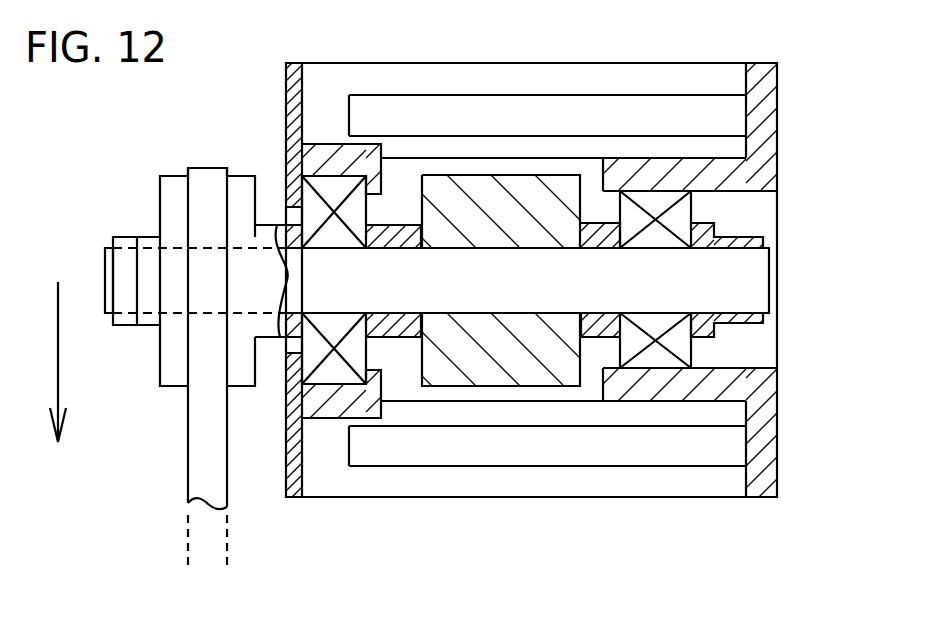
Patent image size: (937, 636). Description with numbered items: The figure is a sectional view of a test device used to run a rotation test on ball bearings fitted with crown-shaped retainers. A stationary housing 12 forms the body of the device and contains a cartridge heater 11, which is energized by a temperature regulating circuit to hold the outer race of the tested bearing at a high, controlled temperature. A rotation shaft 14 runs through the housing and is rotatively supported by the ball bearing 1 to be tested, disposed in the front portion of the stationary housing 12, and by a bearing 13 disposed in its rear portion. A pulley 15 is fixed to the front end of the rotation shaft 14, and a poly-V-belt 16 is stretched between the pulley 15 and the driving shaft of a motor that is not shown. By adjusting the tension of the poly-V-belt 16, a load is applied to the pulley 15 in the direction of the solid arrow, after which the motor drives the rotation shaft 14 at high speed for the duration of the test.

The ball bearing 1 is at (332, 375).
The cartridge heater 11 is at (593, 445).
The stationary housing 12 is at (757, 163).
The bearing 13 is at (680, 345).
The rotation shaft 14 is at (757, 277).
The pulley 15 is at (175, 207).
The poly-V-belt 16 is at (207, 462).